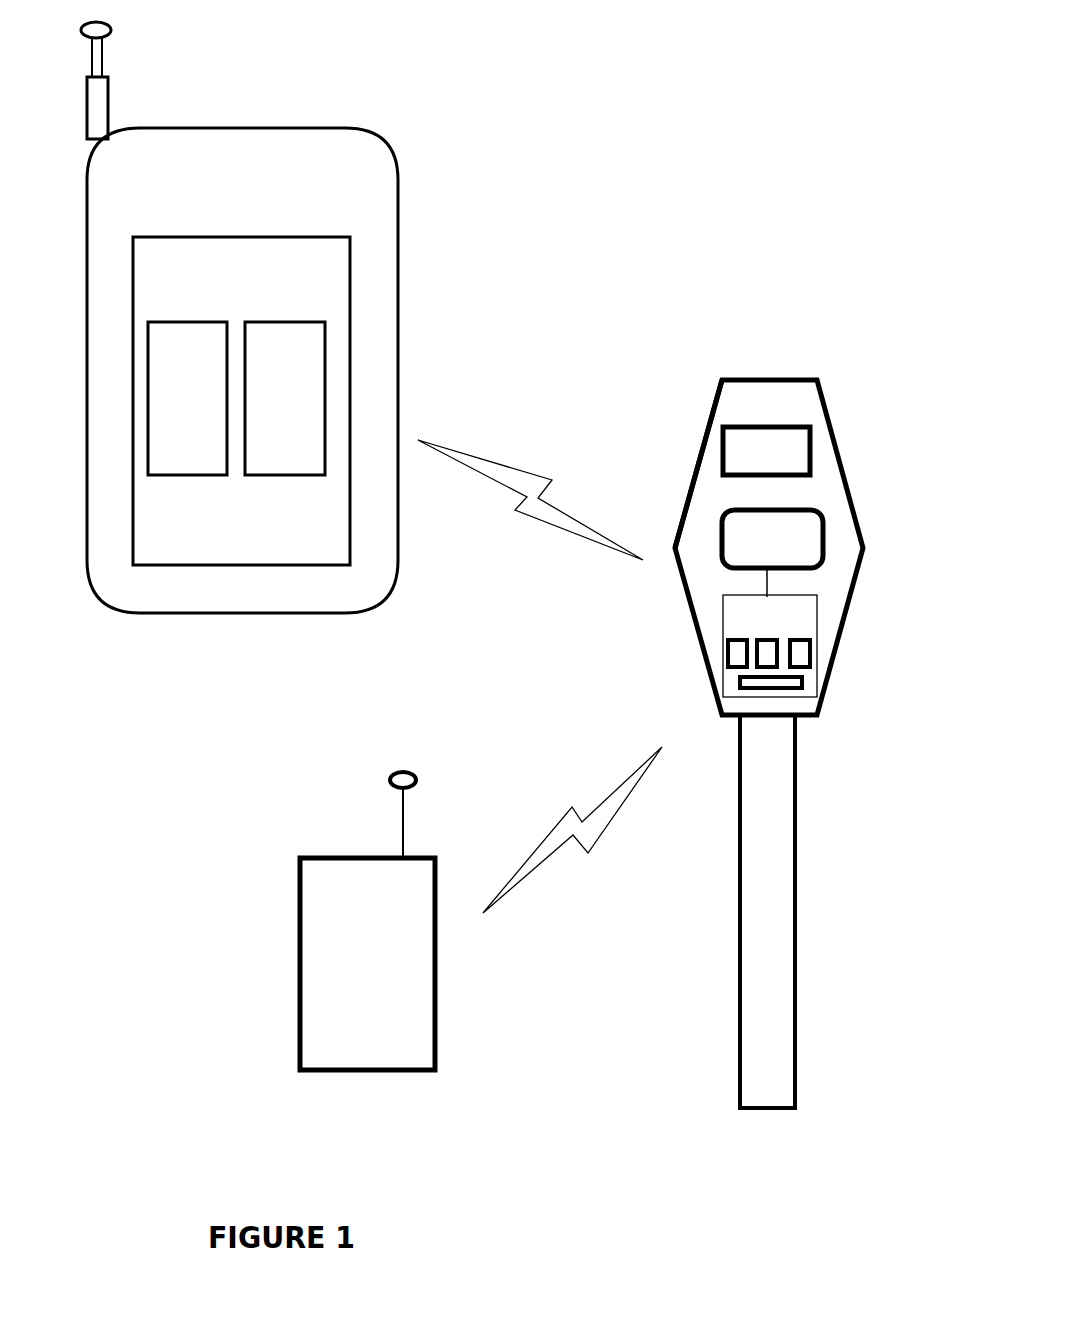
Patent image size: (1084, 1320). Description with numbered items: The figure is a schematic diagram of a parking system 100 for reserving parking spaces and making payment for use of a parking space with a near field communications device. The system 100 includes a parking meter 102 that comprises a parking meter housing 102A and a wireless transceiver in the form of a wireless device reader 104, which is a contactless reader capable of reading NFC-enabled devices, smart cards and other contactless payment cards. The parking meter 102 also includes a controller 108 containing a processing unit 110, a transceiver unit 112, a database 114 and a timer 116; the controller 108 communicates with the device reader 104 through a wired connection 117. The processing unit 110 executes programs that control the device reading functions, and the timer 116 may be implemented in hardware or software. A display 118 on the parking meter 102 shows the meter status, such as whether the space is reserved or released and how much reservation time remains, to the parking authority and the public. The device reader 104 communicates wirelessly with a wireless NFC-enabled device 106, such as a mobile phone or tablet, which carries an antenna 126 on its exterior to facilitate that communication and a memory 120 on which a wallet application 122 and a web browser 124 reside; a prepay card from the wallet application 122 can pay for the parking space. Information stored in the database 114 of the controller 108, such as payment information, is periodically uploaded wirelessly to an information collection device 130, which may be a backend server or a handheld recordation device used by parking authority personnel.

The parking system 100 is at (258, 62).
The wireless NFC-enabled device 106 is at (150, 130).
The antenna 126 is at (98, 50).
The memory 120 is at (241, 401).
The wallet application 122 is at (213, 470).
The web browser 124 is at (277, 470).
The parking meter 102 is at (770, 378).
The parking meter housing 102A is at (707, 430).
The display 118 is at (800, 448).
The wireless device reader 104 is at (720, 538).
The wired connection 117 is at (767, 582).
The controller 108 is at (722, 613).
The transceiver unit 112 is at (733, 657).
The timer 116 is at (770, 648).
The database 114 is at (800, 653).
The processing unit 110 is at (770, 683).
The information collection device 130 is at (437, 922).